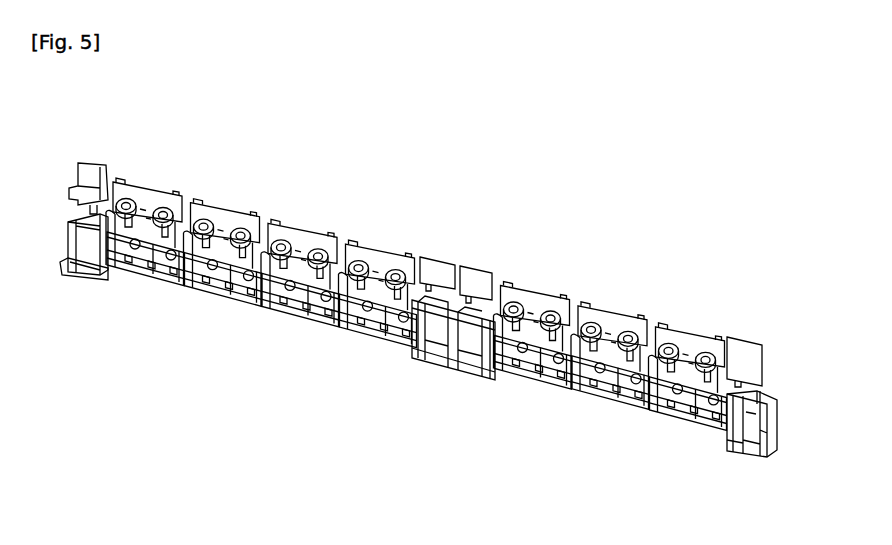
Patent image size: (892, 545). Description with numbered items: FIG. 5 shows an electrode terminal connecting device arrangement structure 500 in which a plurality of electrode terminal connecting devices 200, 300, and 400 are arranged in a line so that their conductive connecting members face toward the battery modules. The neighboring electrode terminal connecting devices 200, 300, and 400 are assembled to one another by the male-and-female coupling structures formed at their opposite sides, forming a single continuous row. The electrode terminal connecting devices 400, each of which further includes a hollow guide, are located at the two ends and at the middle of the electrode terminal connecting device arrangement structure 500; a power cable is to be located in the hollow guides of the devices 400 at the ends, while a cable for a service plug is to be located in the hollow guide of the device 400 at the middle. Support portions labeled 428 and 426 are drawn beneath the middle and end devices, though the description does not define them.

The electrode terminal connecting device arrangement structure 500 is at (77, 174).
The electrode terminal connecting device 400 is at (158, 191).
The electrode terminal connecting device 200 is at (240, 213).
The electrode terminal connecting device 300 is at (630, 316).
The middle support block 428 is at (470, 380).
The end support block 426 is at (743, 459).